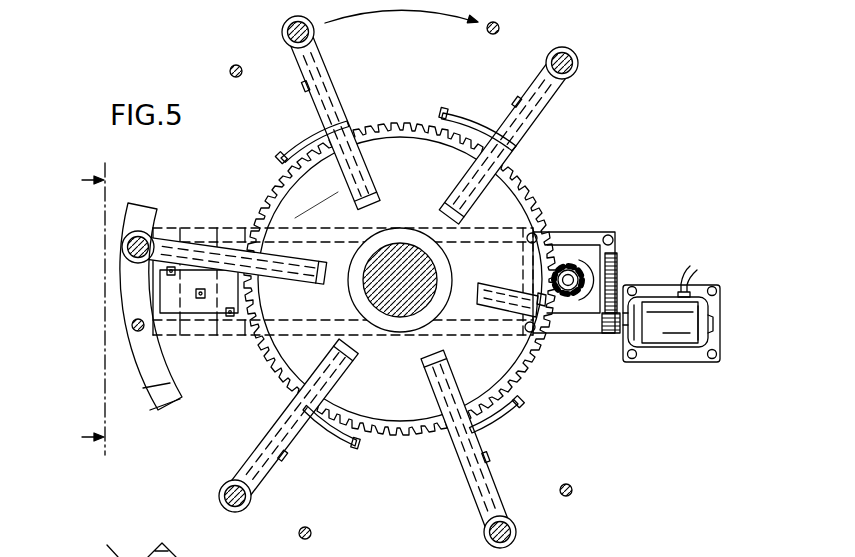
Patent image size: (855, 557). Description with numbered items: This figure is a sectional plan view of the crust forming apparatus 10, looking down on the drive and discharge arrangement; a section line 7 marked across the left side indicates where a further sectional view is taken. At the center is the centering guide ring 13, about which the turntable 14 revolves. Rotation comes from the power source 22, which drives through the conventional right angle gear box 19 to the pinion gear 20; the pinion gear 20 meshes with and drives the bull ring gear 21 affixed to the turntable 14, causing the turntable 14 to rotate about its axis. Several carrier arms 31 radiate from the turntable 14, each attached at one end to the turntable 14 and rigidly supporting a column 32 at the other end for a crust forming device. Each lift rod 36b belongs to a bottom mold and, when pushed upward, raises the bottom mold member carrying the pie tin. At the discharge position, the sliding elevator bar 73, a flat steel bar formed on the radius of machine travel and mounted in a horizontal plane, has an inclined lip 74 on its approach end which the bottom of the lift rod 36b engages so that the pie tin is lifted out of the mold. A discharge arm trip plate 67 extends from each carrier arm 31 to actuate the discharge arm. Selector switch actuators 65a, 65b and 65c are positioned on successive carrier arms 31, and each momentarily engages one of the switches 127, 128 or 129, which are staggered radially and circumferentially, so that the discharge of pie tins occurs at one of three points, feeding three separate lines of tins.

The section line 7- 7 is at (83, 309).
The crust forming apparatus 10 is at (645, 266).
The centering guide ring 13 is at (396, 250).
The turntable 14 is at (405, 395).
The right angle gear box 19 is at (623, 248).
The pinion gear 20 is at (578, 268).
The bull ring gear 21 is at (548, 197).
The power source 22 is at (678, 365).
The carrier arm 31 is at (338, 100).
The column 32 is at (283, 31).
The lift rod 36b is at (230, 72).
The switch actuator 65a is at (180, 262).
The switch actuator 65b is at (301, 91).
The switch actuator 65c is at (516, 105).
The discharge arm trip plate 67 is at (277, 157).
The sliding elevator bar 73 is at (153, 213).
The inclined lip 74 is at (158, 411).
The switch 127 is at (180, 267).
The switch 128 is at (208, 293).
The switch 129 is at (229, 318).